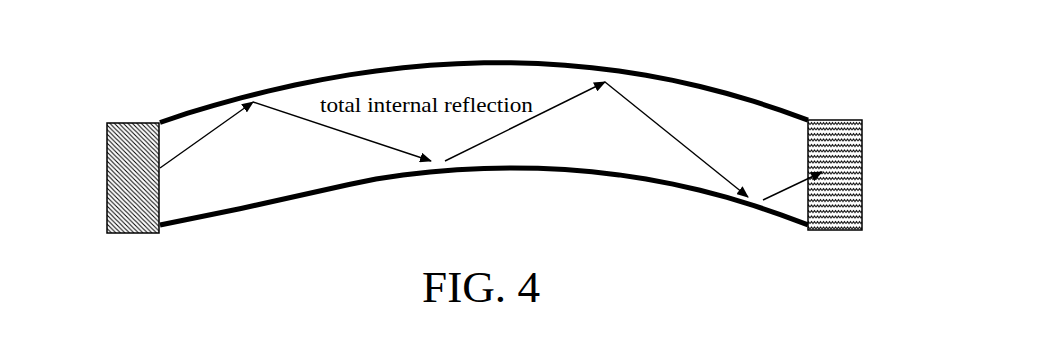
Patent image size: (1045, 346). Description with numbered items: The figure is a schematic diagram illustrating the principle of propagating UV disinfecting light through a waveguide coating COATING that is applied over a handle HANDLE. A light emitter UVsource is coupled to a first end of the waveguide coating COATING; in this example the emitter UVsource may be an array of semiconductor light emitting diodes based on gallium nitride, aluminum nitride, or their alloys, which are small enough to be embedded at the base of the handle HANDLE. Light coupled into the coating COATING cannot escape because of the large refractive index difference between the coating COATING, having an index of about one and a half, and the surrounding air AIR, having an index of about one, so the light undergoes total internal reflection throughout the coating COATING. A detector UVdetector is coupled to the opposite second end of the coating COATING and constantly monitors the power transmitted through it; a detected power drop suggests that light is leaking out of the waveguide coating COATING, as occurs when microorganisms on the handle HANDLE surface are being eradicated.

The waveguide coating COATING is at (484, 125).
The handle HANDLE is at (484, 196).
The UV source UVsource is at (94, 178).
The UV detector UVdetector is at (876, 175).
The air AIR is at (486, 33).